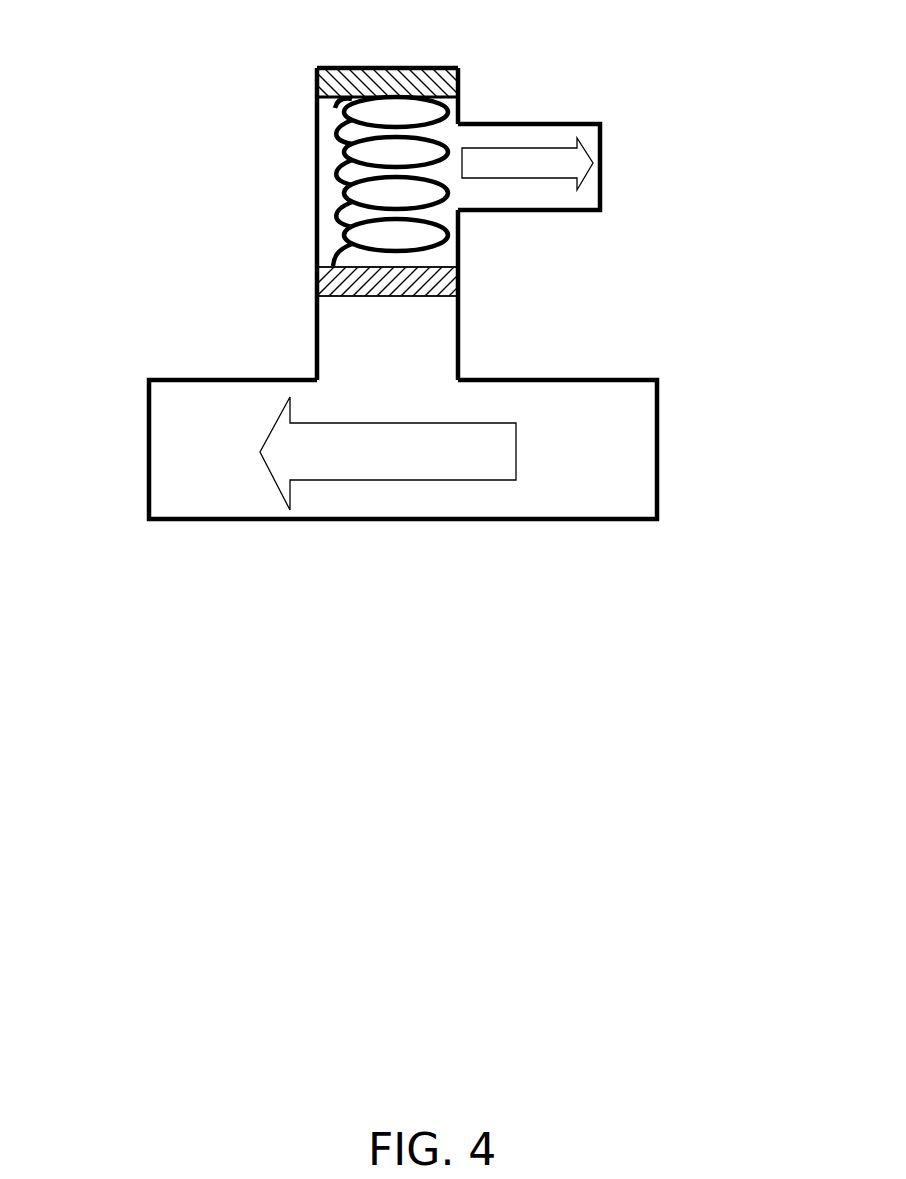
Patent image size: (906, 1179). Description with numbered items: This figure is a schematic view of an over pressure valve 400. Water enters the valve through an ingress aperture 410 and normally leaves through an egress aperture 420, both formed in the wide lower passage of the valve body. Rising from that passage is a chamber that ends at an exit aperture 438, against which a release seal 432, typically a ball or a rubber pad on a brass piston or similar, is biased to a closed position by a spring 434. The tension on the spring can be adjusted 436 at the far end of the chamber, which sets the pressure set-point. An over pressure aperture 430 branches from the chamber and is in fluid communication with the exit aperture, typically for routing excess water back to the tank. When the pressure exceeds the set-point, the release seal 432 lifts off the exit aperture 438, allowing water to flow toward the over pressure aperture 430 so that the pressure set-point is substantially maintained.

The over pressure valve 400 is at (183, 57).
The ingress aperture 410 is at (630, 435).
The egress aperture 420 is at (177, 437).
The over pressure aperture 430 is at (588, 153).
The release seal 432 is at (325, 283).
The spring 434 is at (337, 182).
The spring tension adjustment 436 is at (374, 67).
The exit aperture 438 is at (386, 334).